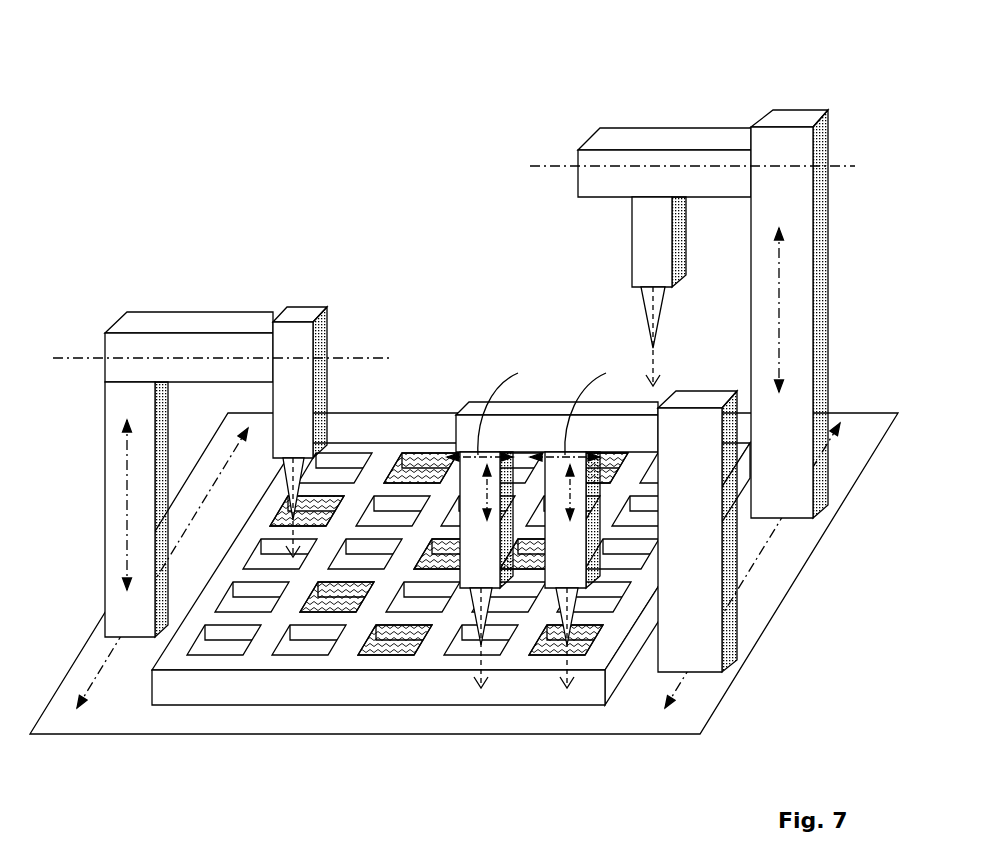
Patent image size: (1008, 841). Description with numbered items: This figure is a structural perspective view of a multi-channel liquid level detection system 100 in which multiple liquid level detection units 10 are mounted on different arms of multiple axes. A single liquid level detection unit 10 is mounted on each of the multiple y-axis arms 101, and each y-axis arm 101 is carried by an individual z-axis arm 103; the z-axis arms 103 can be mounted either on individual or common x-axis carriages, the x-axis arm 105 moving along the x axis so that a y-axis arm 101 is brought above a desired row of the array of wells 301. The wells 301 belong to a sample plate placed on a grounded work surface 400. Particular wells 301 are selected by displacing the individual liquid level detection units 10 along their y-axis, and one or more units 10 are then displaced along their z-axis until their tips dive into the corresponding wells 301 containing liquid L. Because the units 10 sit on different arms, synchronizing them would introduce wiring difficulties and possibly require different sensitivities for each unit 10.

The multi-channel liquid level detection system 100 is at (243, 97).
The y-axis arm 101 is at (218, 348).
The z-axis arm 103 is at (110, 498).
The liquid level detection unit 10 is at (304, 413).
The x-axis arm 105 is at (780, 530).
The wells 301 is at (215, 643).
The grounded work surface 400 is at (592, 718).
The liquid L is at (400, 647).